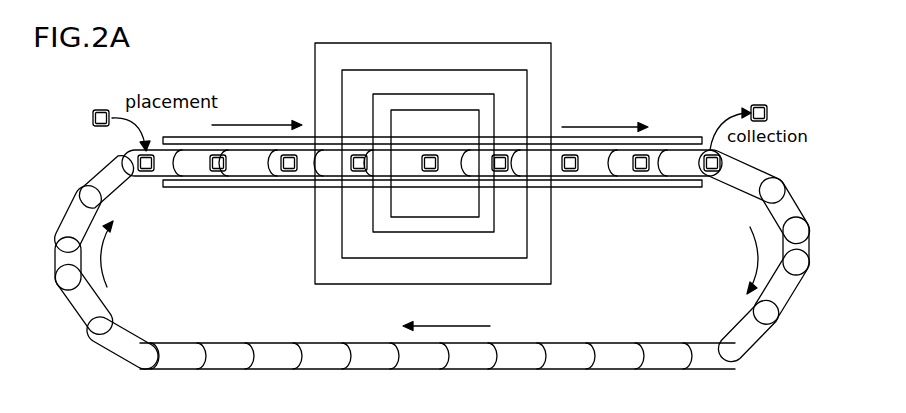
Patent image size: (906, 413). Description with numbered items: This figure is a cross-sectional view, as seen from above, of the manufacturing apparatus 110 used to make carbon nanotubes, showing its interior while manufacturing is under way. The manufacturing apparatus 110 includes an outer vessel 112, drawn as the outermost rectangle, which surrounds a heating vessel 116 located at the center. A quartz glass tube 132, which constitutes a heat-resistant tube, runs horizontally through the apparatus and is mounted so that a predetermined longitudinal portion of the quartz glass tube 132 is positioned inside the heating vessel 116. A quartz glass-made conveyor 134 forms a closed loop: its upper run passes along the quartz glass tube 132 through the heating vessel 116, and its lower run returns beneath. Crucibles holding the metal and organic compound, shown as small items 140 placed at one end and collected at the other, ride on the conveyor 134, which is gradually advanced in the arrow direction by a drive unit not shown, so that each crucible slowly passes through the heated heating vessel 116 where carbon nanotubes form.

The manufacturing apparatus 110 is at (655, 76).
The outer vessel 112 is at (551, 69).
The heating vessel 116 is at (373, 218).
The quartz glass tube 132 is at (683, 137).
The quartz glass-made conveyor 134 is at (655, 342).
The workpieces 140 is at (218, 171).